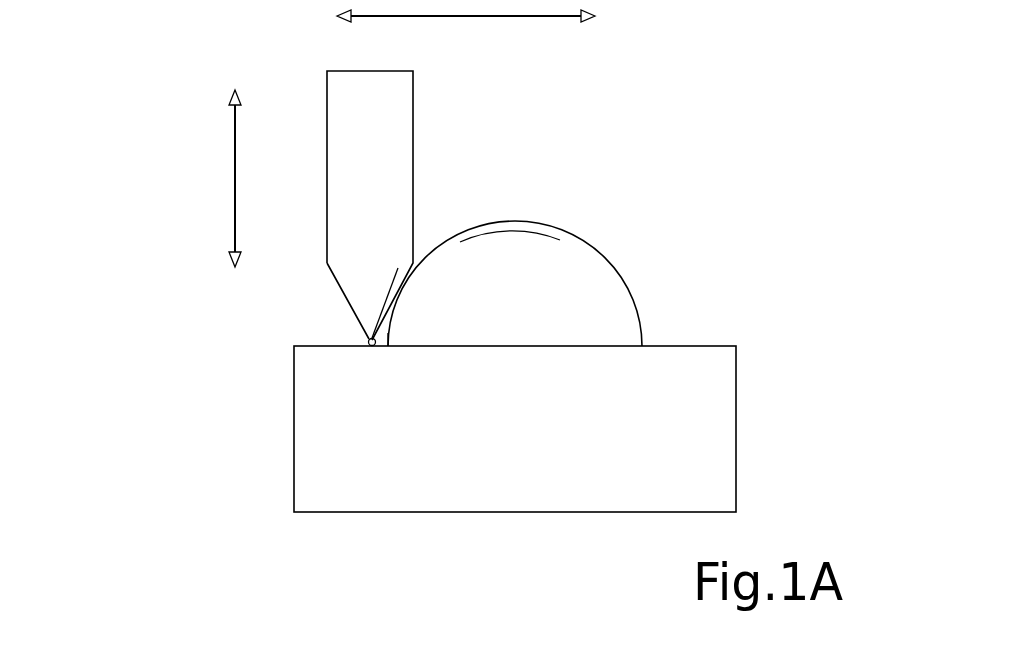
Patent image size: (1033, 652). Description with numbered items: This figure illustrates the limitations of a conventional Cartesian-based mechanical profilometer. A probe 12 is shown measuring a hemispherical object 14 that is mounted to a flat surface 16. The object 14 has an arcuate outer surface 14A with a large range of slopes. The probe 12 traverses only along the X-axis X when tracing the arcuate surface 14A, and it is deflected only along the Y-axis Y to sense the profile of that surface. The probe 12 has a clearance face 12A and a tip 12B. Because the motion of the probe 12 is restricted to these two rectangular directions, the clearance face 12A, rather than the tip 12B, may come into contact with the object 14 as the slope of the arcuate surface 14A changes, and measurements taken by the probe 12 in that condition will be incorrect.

The probe 12 is at (326, 115).
The clearance face 12A is at (378, 327).
The tip 12B is at (367, 339).
The hemispherical object 14 is at (592, 297).
The arcuate outer surface 14A is at (538, 220).
The flat surface 16 is at (698, 344).
The X-axis X is at (517, 16).
The Y-axis Y is at (235, 160).